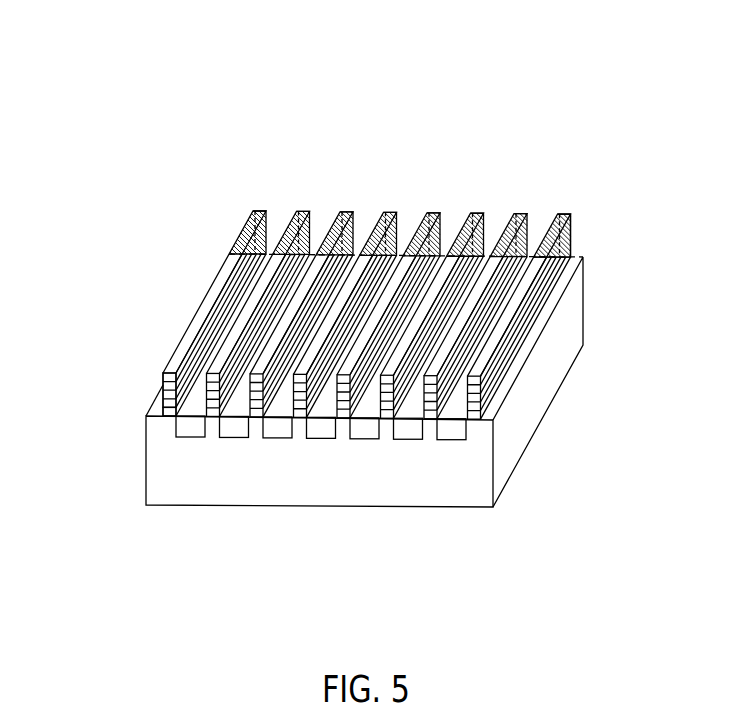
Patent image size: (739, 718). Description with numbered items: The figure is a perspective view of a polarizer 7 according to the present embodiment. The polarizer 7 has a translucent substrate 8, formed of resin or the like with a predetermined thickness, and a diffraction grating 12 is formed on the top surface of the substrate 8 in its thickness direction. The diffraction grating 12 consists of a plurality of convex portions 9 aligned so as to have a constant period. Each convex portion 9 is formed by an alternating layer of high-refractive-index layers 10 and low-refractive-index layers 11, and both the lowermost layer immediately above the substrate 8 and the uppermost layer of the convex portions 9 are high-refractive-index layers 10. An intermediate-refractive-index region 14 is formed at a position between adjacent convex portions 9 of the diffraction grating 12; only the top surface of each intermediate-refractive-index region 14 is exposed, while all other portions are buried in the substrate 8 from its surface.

The polarizer 7 is at (130, 113).
The translucent substrate 8 is at (146, 468).
The convex portion 9 is at (572, 212).
The high-refractive-index layer 10 is at (155, 412).
The low-refractive-index layer 11 is at (157, 402).
The diffraction grating 12 is at (572, 212).
The intermediate-refractive-index region 14 is at (192, 437).